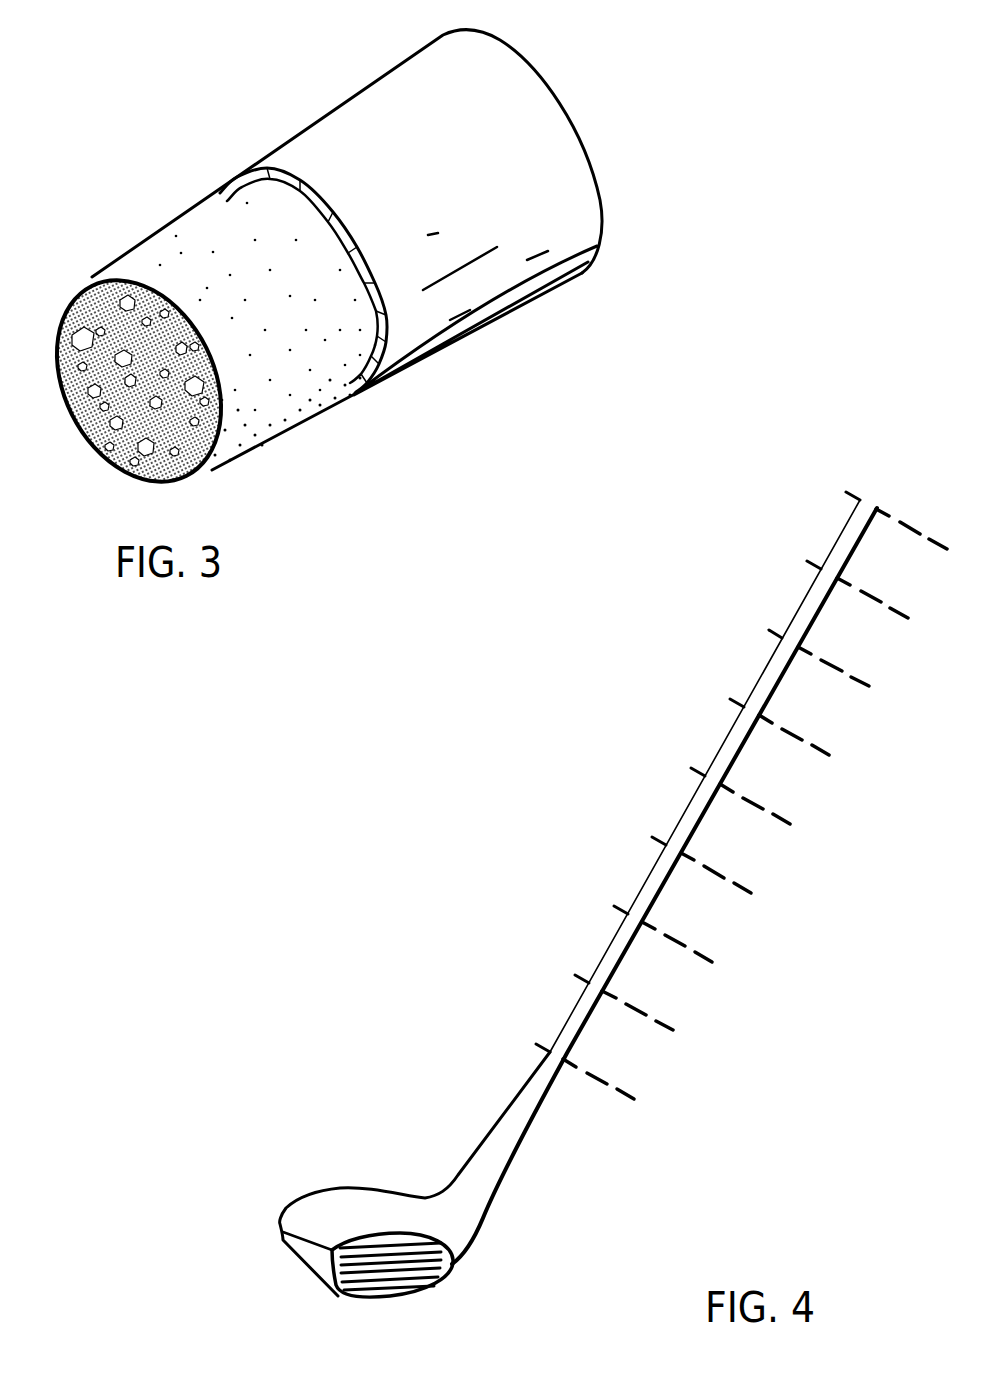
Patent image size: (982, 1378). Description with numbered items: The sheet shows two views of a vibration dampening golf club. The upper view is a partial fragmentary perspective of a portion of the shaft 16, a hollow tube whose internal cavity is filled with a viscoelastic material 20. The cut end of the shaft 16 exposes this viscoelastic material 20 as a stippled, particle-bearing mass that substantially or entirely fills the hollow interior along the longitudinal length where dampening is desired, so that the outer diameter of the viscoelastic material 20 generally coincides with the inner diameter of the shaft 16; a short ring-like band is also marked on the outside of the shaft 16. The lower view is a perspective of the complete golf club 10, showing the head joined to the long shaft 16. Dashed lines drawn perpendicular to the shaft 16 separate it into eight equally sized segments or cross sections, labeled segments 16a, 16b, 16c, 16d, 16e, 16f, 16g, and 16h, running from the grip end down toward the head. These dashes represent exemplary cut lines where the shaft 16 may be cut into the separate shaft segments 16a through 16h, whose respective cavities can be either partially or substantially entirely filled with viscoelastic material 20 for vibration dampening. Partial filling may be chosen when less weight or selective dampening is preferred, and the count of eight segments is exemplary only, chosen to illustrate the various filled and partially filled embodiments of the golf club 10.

In FIG. 4, the golf club 10 is at (418, 1117).
In FIG. 3, the shaft 16 is at (270, 168).
In FIG. 4, the shaft segment 16a is at (848, 537).
In FIG. 4, the shaft segment 16b is at (807, 608).
In FIG. 4, the shaft segment 16c is at (772, 663).
In FIG. 4, the shaft segment 16d is at (735, 738).
In FIG. 4, the shaft segment 16e is at (697, 810).
In FIG. 4, the shaft segment 16f is at (652, 883).
In FIG. 4, the shaft segment 16g is at (613, 948).
In FIG. 4, the shaft segment 16h is at (575, 1018).
In FIG. 3, the viscoelastic material 20 is at (177, 248).